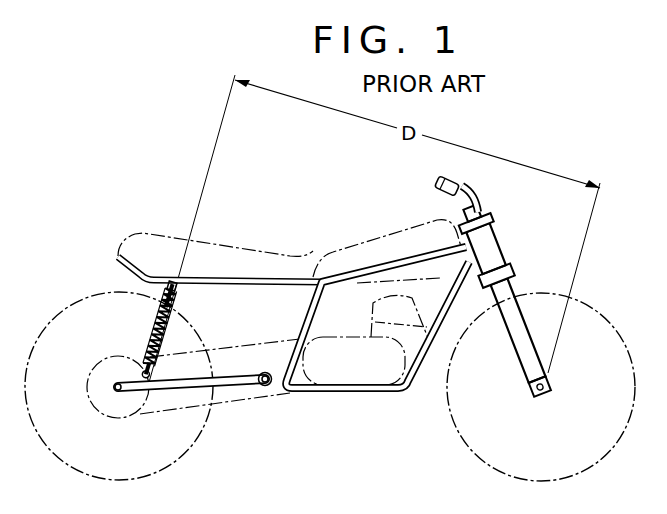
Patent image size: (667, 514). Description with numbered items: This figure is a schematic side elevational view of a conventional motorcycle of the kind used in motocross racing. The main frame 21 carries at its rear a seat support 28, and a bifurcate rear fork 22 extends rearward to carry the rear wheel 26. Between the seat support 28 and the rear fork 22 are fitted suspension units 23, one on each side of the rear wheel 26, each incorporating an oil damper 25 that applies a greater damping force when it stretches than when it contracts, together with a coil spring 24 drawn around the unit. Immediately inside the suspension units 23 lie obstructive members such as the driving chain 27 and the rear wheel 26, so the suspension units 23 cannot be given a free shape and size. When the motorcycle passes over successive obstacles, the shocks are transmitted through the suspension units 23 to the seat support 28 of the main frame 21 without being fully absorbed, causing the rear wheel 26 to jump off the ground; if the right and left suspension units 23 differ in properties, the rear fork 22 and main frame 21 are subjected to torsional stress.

The main frame 21 is at (350, 266).
The rear fork 22 is at (264, 385).
The suspension unit 23 is at (155, 307).
The coil spring 24 is at (152, 331).
The oil damper 25 is at (144, 368).
The rear wheel 26 is at (32, 428).
The driving chain 27 is at (143, 414).
The seat support 28 is at (255, 282).